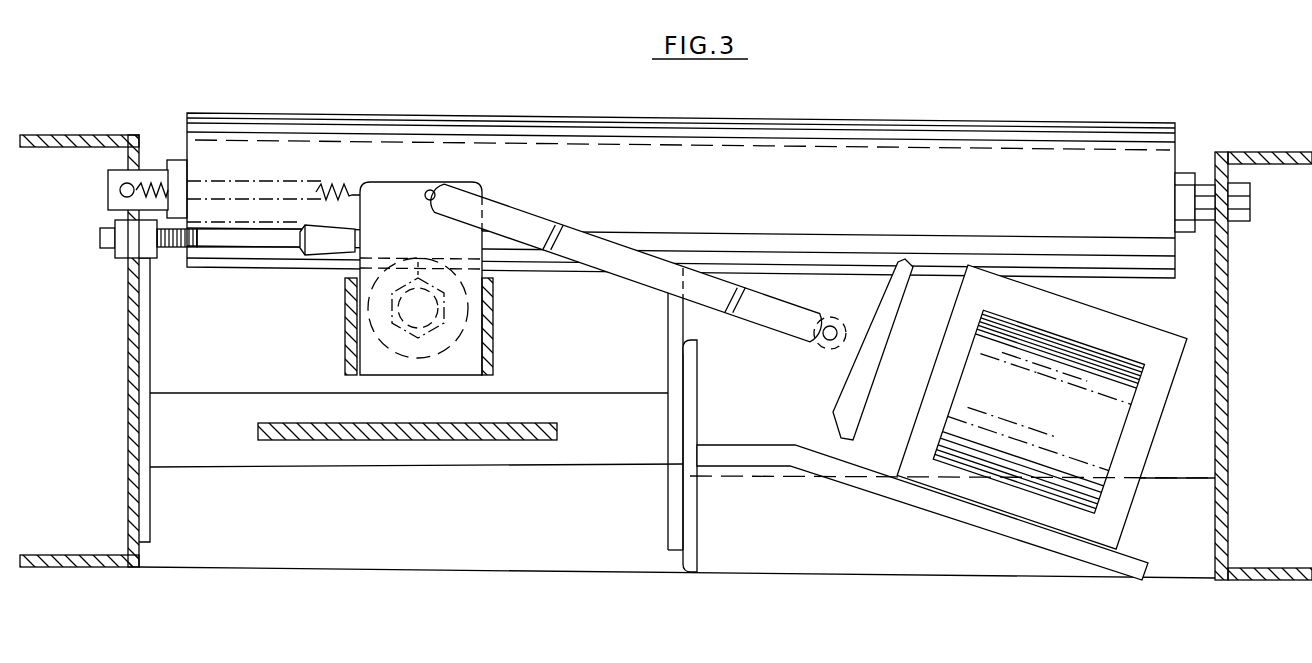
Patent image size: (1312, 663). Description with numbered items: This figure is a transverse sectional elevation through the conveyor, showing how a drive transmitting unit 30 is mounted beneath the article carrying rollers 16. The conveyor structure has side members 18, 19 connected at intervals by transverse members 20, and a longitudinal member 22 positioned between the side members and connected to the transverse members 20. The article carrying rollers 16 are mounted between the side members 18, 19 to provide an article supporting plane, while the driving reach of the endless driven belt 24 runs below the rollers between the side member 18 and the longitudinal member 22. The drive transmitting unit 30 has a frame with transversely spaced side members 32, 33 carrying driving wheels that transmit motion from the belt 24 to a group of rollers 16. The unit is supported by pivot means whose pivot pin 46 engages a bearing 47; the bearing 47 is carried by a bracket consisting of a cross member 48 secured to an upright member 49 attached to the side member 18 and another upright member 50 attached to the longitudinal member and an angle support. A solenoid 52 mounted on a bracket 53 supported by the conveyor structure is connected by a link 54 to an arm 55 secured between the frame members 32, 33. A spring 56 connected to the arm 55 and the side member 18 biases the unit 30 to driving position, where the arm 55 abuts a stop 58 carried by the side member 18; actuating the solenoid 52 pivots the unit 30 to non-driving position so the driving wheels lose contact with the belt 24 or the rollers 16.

The article carrying roller 16 is at (972, 123).
The side member 18 is at (128, 424).
The side member 19 is at (1230, 421).
The transverse member 20 is at (668, 463).
The longitudinal member 22 is at (697, 548).
The endless driven belt 24 is at (448, 428).
The drive transmitting unit 30 is at (415, 278).
The frame side member 32 is at (345, 354).
The frame side member 33 is at (496, 357).
The pivot pin 46 is at (428, 262).
The bearing 47 is at (473, 303).
The cross member 48 is at (578, 397).
The upright member 49 is at (150, 518).
The upright member 50 is at (668, 521).
The solenoid 52 is at (1030, 416).
The bracket 53 is at (958, 520).
The link 54 is at (774, 318).
The arm 55 is at (481, 190).
The spring 56 is at (320, 186).
The stop 58 is at (240, 236).